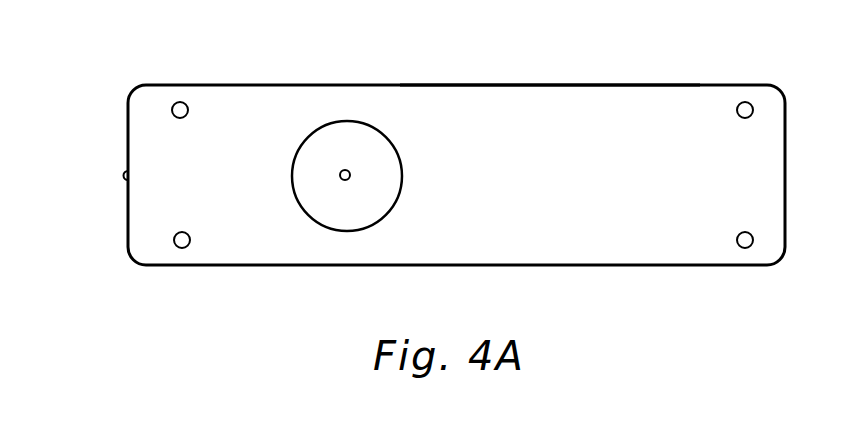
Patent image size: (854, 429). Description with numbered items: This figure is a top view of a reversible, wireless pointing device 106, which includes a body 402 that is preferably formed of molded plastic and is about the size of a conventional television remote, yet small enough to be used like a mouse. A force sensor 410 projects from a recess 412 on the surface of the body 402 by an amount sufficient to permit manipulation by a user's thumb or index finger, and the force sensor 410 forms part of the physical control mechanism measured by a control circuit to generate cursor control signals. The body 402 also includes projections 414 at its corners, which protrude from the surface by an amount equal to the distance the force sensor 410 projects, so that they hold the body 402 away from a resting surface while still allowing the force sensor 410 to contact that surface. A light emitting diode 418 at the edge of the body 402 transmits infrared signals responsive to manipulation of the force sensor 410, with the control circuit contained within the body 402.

The reversible wireless pointing device 106 is at (620, 85).
The body 402 is at (663, 265).
The force sensor 410 is at (350, 175).
The recess 412 is at (385, 135).
The projections 414 is at (184, 118).
The light emitting diode (LED) 418 is at (128, 176).